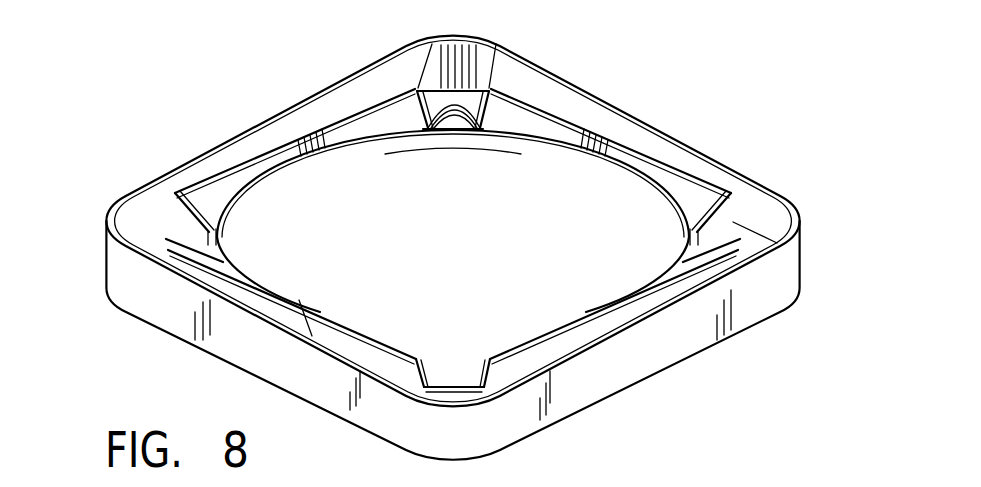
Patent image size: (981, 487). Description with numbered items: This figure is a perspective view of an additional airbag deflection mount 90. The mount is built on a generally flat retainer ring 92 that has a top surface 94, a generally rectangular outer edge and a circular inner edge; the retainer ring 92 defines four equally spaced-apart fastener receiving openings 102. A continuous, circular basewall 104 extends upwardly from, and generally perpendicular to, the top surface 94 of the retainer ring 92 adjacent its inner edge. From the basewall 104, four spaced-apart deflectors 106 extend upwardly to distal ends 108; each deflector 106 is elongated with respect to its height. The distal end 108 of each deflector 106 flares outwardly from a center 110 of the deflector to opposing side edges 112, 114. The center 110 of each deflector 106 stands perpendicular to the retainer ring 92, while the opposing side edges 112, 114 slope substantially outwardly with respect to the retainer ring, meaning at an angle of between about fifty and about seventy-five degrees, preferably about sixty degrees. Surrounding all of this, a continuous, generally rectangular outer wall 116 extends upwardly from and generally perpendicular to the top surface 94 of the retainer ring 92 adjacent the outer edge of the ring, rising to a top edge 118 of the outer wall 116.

The airbag deflection mount 90 is at (623, 38).
The retainer ring 92 is at (733, 222).
The top surface 94 is at (762, 240).
The fastener receiving openings 102 is at (452, 110).
The basewall 104 is at (450, 385).
The deflectors 106 is at (357, 117).
The distal ends 108 is at (300, 140).
The center 110 is at (323, 152).
The side edge 112 is at (492, 50).
The side edge 114 is at (428, 52).
The outer wall 116 is at (148, 200).
The top edge 118 is at (170, 173).